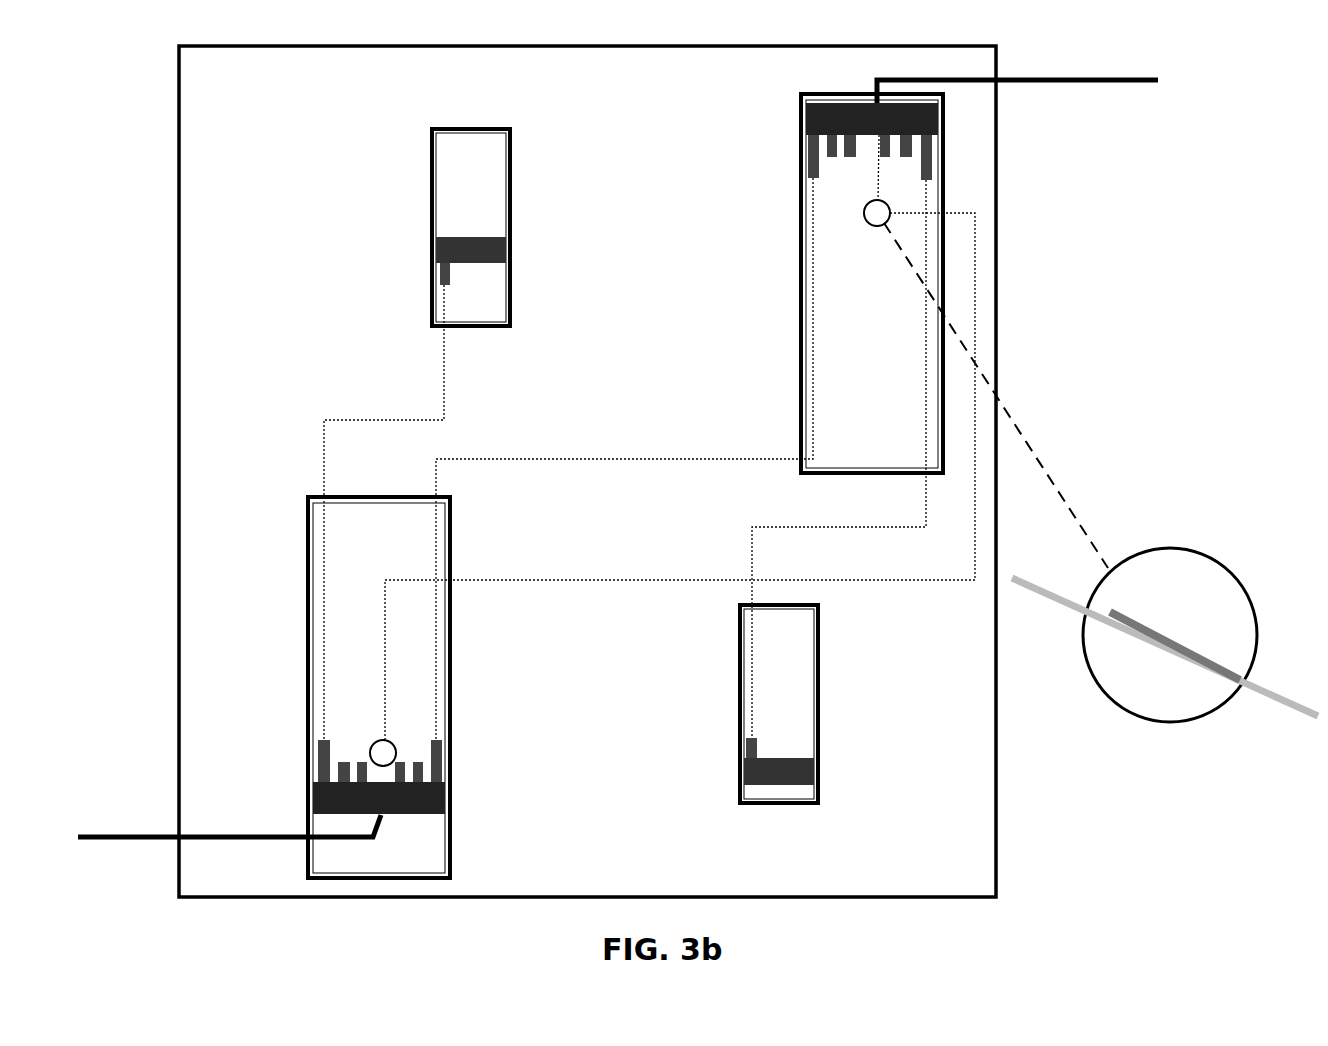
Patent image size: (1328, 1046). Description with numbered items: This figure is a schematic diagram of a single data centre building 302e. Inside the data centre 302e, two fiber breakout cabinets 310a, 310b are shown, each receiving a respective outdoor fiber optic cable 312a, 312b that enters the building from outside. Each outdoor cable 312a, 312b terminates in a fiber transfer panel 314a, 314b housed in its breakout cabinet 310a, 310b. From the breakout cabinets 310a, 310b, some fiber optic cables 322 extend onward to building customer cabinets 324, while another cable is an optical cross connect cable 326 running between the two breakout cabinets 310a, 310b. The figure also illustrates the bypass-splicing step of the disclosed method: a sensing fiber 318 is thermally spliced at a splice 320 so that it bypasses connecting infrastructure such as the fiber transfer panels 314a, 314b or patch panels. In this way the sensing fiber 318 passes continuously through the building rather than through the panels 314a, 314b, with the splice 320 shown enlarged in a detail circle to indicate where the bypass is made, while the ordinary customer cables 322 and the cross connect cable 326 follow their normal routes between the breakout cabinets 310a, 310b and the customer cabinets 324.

The data centre 302e is at (1073, 250).
The fiber breakout cabinet 310a is at (452, 655).
The fiber breakout cabinet 310b is at (800, 360).
The outdoor fiber optic cable 312a is at (127, 832).
The outdoor fiber optic cable 312b is at (1055, 83).
The fiber transfer panel 314a is at (425, 790).
The fiber transfer panel 314b is at (823, 115).
The sensing fiber 318 is at (975, 305).
The splice 320 is at (875, 228).
The fiber optic cable 322 is at (445, 350).
The building customer cabinet 324 is at (430, 192).
The optical cross connect cable 326 is at (684, 462).